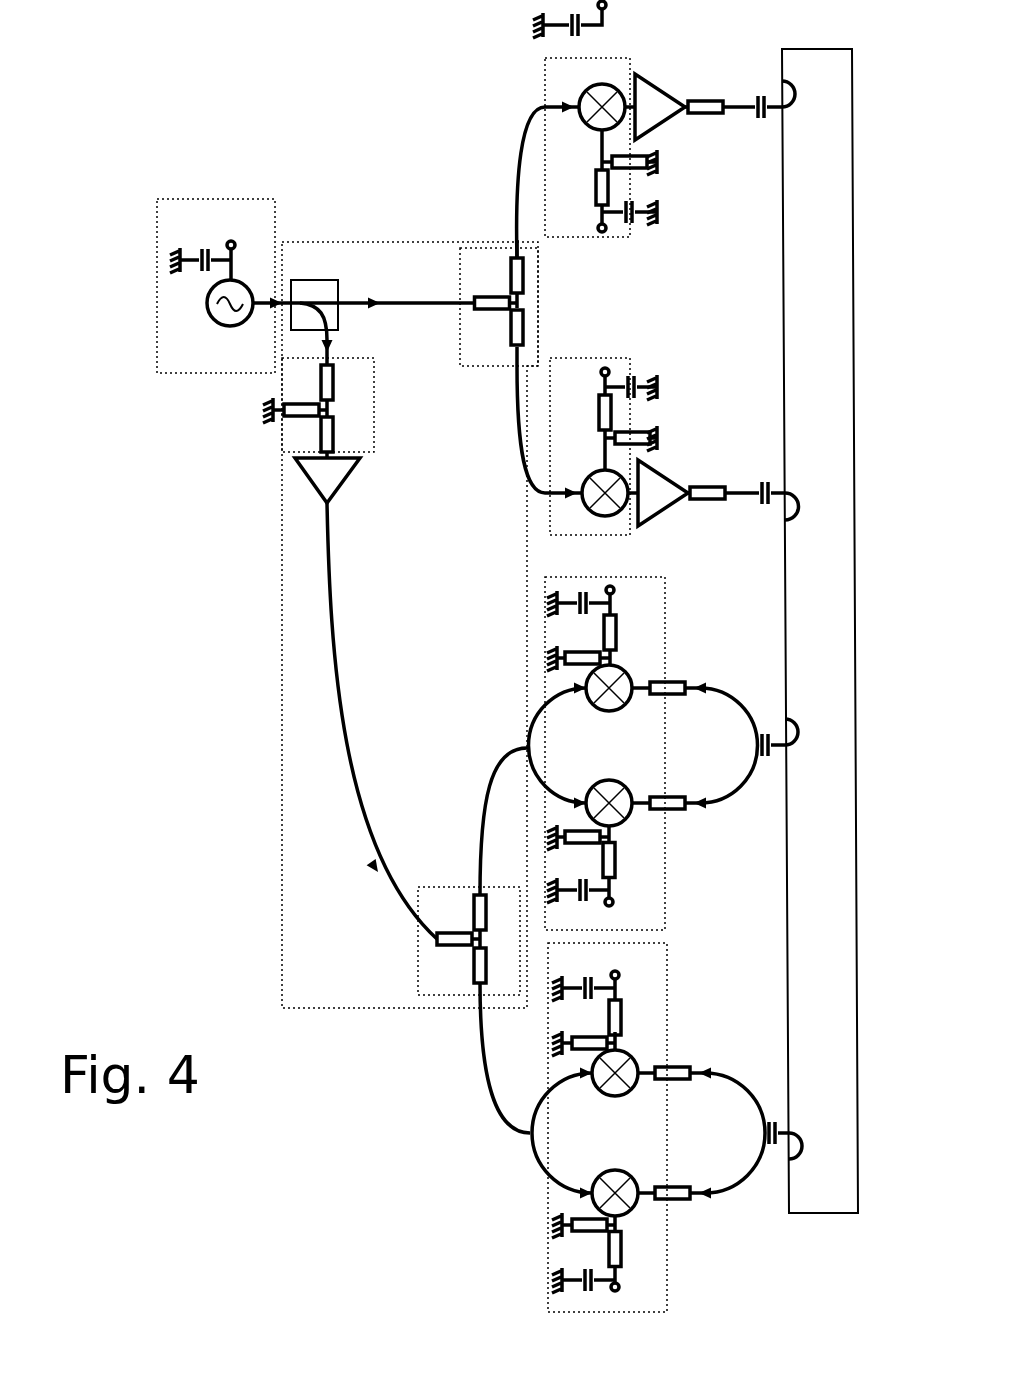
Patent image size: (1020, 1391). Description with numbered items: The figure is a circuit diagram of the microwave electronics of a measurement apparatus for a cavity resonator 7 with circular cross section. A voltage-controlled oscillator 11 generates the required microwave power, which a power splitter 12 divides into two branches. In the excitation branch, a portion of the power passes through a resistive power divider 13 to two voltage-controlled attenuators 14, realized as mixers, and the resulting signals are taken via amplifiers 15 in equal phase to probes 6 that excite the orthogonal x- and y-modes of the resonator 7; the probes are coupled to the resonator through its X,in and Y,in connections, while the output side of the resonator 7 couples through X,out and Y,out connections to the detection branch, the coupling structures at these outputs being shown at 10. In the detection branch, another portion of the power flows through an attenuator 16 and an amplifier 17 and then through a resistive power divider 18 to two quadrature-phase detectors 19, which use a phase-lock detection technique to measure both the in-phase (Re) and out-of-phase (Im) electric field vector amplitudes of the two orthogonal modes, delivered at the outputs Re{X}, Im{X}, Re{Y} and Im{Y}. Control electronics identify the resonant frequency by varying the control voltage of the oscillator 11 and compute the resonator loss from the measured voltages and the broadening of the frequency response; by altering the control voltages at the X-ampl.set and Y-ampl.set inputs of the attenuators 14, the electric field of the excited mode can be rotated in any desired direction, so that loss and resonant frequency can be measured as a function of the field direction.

The probes 6 is at (793, 101).
The resonator 7 is at (826, 308).
The output coupling loops 10 is at (803, 1146).
The voltage-controlled oscillator 11 is at (243, 199).
The power splitter 12 is at (317, 280).
The resistive power divider 13 is at (457, 314).
The voltage-controlled attenuators 14 is at (607, 58).
The amplifiers 15 is at (655, 130).
The attenuator 16 is at (374, 405).
The amplifier 17 is at (340, 490).
The resistive power divider 18 is at (466, 887).
The quadrature-phase detectors 19 is at (665, 652).